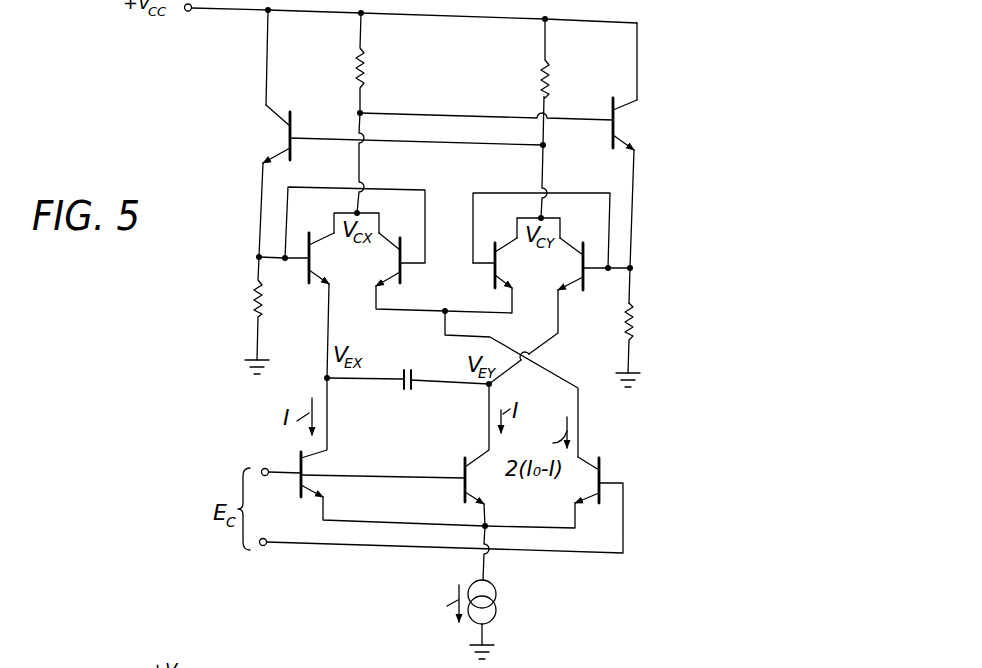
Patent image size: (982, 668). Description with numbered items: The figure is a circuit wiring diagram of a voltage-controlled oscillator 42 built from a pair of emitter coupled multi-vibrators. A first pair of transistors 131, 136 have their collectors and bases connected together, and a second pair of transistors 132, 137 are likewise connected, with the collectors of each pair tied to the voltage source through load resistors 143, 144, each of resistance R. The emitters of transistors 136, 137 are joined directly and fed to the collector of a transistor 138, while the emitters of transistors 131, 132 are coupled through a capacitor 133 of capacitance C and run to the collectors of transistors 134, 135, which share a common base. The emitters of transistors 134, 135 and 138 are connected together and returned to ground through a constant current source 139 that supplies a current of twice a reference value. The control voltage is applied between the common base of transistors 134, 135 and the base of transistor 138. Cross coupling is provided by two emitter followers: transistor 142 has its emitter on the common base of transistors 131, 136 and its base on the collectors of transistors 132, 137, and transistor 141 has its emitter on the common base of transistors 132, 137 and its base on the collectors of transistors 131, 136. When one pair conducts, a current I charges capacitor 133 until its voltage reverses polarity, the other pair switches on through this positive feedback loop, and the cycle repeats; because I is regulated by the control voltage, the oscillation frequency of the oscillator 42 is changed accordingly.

The voltage-controlled oscillator 42 is at (663, 156).
The transistor 131 is at (304, 278).
The transistor 132 is at (586, 277).
The capacitor 133 is at (405, 391).
The transistor 134 is at (298, 487).
The transistor 135 is at (460, 486).
The transistor 136 is at (402, 270).
The transistor 137 is at (490, 280).
The transistor 138 is at (603, 499).
The constant current source 139 is at (493, 590).
The transistor 141 is at (600, 131).
The transistor 142 is at (292, 150).
The resistor 143 is at (350, 75).
The resistor 144 is at (553, 74).